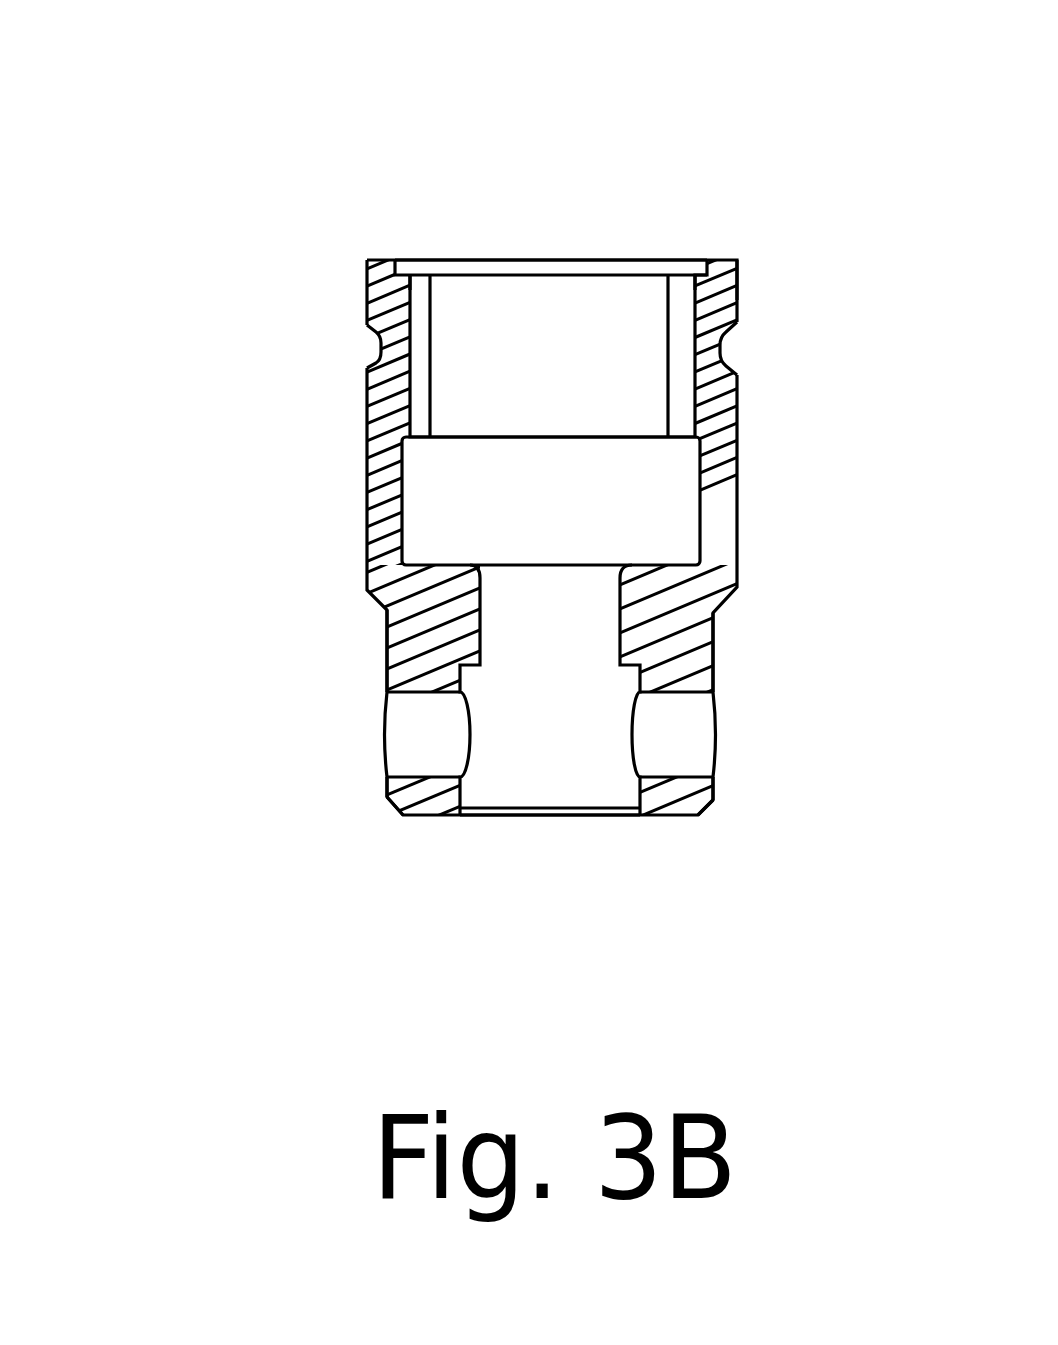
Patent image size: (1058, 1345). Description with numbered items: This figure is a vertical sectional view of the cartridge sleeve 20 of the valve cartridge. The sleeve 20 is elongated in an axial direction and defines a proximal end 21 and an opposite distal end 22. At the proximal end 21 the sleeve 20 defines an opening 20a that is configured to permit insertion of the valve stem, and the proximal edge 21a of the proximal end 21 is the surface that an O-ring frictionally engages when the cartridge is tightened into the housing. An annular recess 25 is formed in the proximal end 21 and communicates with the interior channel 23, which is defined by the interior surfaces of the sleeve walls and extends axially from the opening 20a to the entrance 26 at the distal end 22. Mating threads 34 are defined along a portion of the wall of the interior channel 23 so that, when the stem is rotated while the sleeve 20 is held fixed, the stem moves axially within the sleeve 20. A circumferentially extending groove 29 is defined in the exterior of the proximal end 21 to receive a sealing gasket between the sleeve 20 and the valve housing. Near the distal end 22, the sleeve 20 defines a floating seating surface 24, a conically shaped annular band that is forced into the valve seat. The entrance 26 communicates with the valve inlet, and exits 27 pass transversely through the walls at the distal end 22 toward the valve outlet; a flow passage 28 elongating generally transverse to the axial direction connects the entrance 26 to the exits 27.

The cartridge sleeve 20 is at (247, 283).
The proximal end 21 is at (367, 270).
The proximal edge 21a is at (725, 260).
The opening 20a is at (597, 260).
The annular recess 25 is at (637, 272).
The interior channel 23 is at (553, 368).
The mating threads 34 is at (422, 377).
The circumferentially extending groove 29 is at (713, 355).
The flow passage 28 is at (643, 737).
The exit 27 is at (390, 728).
The distal end 22 is at (387, 793).
The floating seating surface 24 is at (390, 807).
The entrance 26 is at (562, 815).